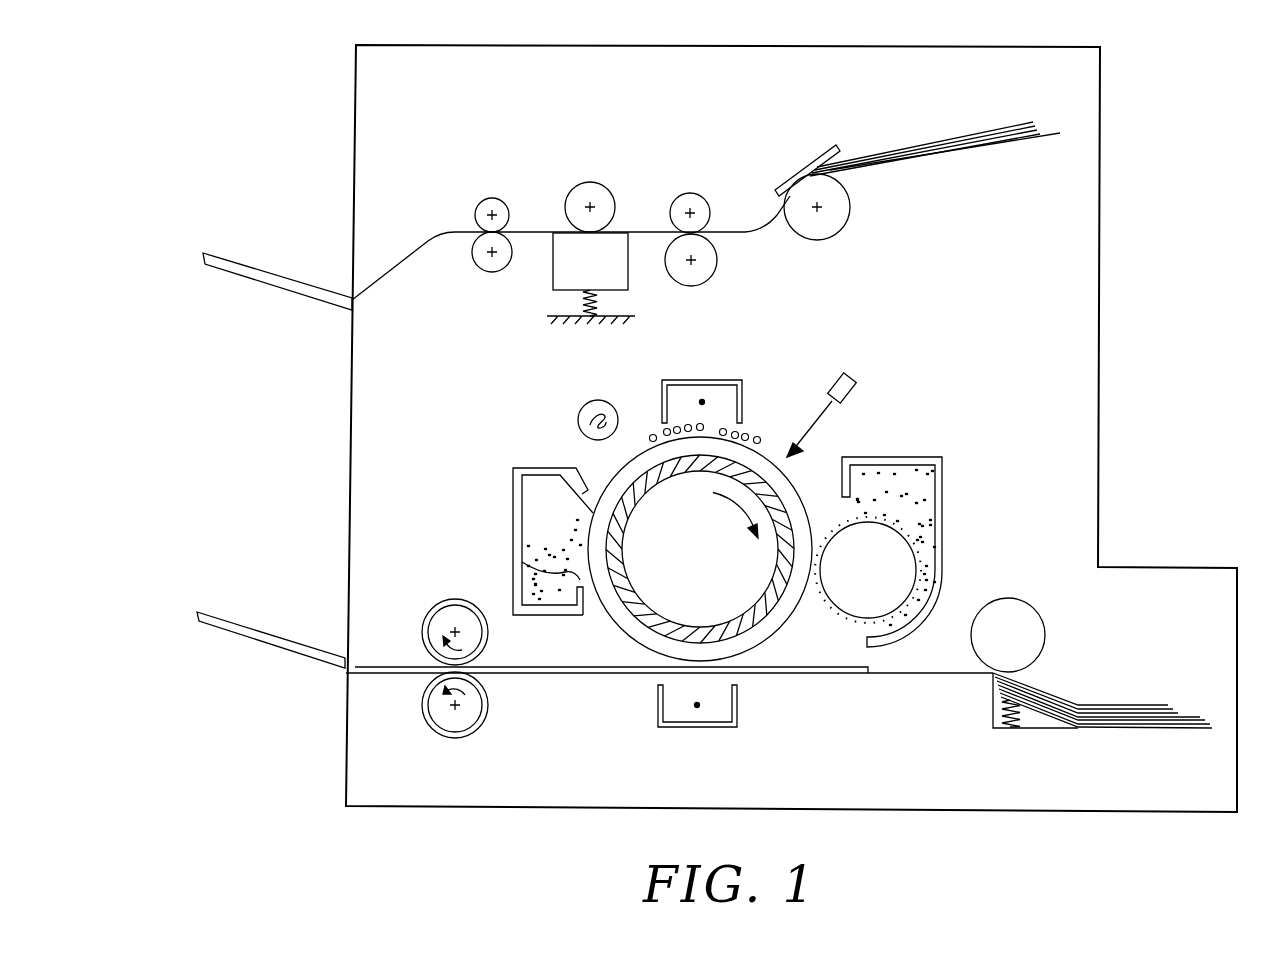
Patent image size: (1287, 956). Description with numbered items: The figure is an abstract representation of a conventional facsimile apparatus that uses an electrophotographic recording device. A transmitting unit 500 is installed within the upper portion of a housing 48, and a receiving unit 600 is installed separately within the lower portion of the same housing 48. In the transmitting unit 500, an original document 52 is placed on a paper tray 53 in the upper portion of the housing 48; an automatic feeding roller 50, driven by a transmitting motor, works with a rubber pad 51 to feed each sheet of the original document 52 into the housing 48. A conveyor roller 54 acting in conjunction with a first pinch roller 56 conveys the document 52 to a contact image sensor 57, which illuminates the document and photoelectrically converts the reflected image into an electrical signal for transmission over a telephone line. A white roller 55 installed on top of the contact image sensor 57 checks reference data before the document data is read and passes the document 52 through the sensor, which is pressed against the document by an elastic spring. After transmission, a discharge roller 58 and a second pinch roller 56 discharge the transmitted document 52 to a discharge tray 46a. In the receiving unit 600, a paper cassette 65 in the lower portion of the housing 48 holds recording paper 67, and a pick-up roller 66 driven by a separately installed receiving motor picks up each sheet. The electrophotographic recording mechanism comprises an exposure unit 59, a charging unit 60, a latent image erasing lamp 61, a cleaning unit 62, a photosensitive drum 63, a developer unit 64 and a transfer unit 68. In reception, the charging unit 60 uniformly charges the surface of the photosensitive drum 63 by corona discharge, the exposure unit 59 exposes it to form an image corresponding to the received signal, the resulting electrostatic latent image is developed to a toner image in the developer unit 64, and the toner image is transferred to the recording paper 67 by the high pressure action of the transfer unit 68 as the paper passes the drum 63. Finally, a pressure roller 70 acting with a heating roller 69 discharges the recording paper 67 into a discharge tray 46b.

The transmitting unit 500 is at (397, 140).
The receiving unit 600 is at (430, 475).
The discharge tray 46a is at (260, 270).
The discharge tray 46b is at (257, 630).
The housing 48 is at (1100, 430).
The automatic feeding roller 50 is at (847, 212).
The rubber pad 51 is at (817, 158).
The original document 52 is at (953, 133).
The paper tray 53 is at (1003, 145).
The conveyor roller 54 is at (712, 270).
The white roller 55 is at (604, 185).
The pinch roller 56 is at (500, 203).
The contact image sensor 57 is at (557, 267).
The discharge roller 58 is at (478, 262).
The exposure unit 59 is at (848, 378).
The charging unit 60 is at (705, 380).
The latent image erasing lamp 61 is at (610, 402).
The cleaning unit 62 is at (540, 465).
The photosensitive drum 63 is at (753, 577).
The developer unit 64 is at (905, 556).
The paper cassette 65 is at (1052, 729).
The pick-up roller 66 is at (1037, 632).
The recording paper 67 is at (1057, 692).
The transfer unit 68 is at (739, 705).
The heating roller 69 is at (435, 620).
The pressure roller 70 is at (432, 712).